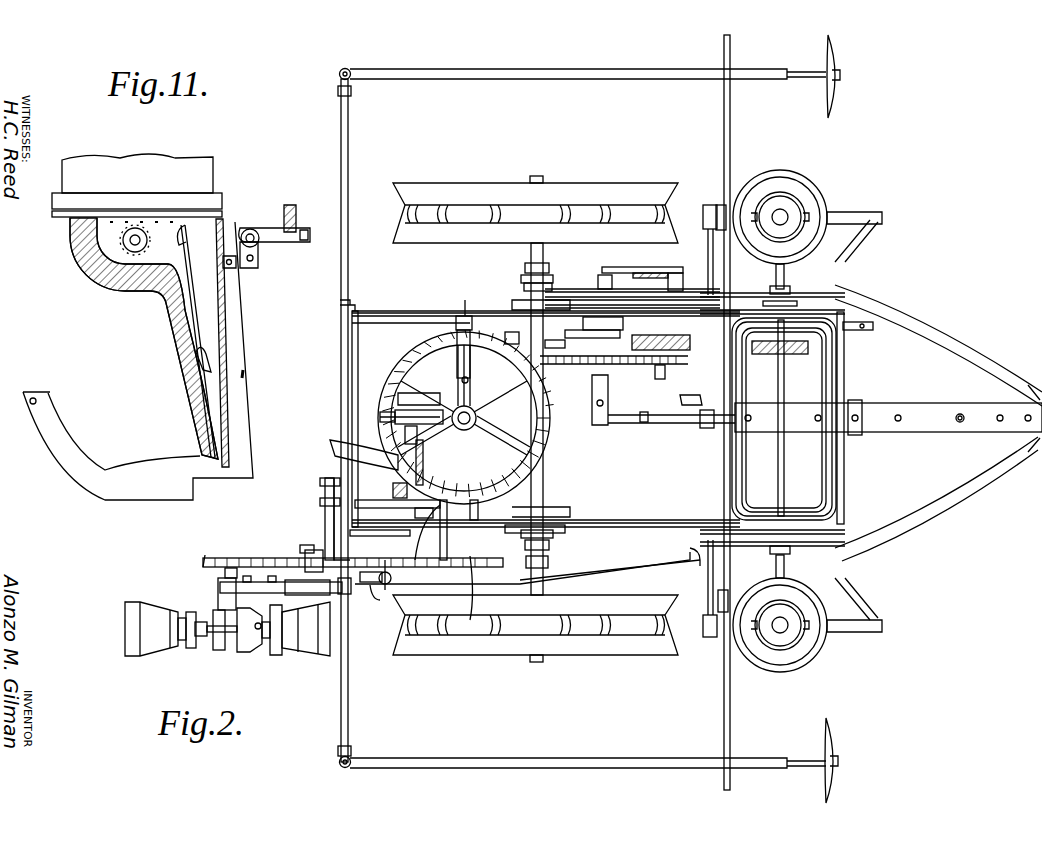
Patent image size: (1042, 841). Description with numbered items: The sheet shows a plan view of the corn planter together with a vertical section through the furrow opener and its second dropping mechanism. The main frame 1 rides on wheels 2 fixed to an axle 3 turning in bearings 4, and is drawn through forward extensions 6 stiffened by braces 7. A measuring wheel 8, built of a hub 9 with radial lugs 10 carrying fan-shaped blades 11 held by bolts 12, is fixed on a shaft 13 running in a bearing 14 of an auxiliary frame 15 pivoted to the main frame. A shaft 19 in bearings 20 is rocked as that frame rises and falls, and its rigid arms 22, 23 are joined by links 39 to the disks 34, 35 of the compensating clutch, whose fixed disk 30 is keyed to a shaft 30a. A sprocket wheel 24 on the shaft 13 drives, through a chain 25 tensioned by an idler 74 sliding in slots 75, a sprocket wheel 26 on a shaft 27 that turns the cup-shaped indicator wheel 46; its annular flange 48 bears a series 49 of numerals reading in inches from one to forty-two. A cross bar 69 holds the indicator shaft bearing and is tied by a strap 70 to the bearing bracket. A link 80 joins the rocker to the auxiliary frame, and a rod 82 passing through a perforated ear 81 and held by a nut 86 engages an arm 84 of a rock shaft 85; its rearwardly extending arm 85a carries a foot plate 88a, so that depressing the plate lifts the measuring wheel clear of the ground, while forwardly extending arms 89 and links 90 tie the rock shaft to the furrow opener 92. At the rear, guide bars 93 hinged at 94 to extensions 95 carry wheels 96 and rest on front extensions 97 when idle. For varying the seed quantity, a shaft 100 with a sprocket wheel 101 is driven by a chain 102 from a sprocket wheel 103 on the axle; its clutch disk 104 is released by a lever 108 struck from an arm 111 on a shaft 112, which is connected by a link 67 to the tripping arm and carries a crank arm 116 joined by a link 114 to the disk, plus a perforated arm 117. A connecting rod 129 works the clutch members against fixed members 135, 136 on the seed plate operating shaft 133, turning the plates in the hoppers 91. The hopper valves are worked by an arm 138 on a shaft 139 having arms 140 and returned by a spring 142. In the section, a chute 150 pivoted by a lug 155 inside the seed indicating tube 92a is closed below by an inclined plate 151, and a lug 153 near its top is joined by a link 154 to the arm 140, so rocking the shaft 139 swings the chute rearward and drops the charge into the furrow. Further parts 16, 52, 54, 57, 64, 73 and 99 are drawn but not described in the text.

In FIG. 2, the main frame 1 is at (340, 400).
In FIG. 2, the wheels 2 is at (610, 192).
In FIG. 2, the axle 3 is at (545, 500).
In FIG. 2, the bearings 4 is at (530, 310).
In FIG. 2, the forward extensions 6 is at (442, 318).
In FIG. 2, the braces 7 is at (948, 340).
In FIG. 2, the measuring wheel 8 is at (438, 548).
In FIG. 2, the hub 9 is at (222, 598).
In FIG. 2, the radial lugs 10 is at (240, 650).
In FIG. 2, the blades 11 is at (158, 652).
In FIG. 2, the bolts 12 is at (260, 650).
In FIG. 2, the shaft 13 is at (222, 572).
In FIG. 2, the bearing 14 is at (218, 585).
In FIG. 2, the auxiliary frame 15 is at (305, 594).
In FIG. 2, the cone pulley 16 is at (325, 656).
In FIG. 2, the shaft 19 is at (430, 542).
In FIG. 2, the bearings 20 is at (322, 515).
In FIG. 2, the rigid arm 22 is at (322, 480).
In FIG. 2, the rigid arm 23 is at (325, 502).
In FIG. 2, the sprocket wheel 24 is at (208, 558).
In FIG. 2, the chain 25 is at (258, 553).
In FIG. 2, the sprocket wheel 26 is at (445, 552).
In FIG. 2, the shaft 27 is at (500, 512).
In FIG. 2, the disk 30 is at (393, 490).
In FIG. 2, the shaft 30a is at (416, 462).
In FIG. 2, the disk 34 is at (340, 452).
In FIG. 2, the disk 35 is at (412, 588).
In FIG. 2, the link 39 is at (345, 482).
In FIG. 2, the indicator wheel 46 is at (495, 430).
In FIG. 2, the lateral annular flange 48 is at (549, 417).
In FIG. 2, the series of numerals 49 is at (408, 364).
In FIG. 2, the slide 52 is at (395, 412).
In FIG. 2, the pin 54 is at (395, 418).
In FIG. 2, the hub 57 is at (464, 400).
In FIG. 2, the pawl 64 is at (432, 398).
In FIG. 2, the link 67 is at (559, 348).
In FIG. 2, the cross bar 69 is at (522, 290).
In FIG. 2, the strap 70 is at (455, 375).
In FIG. 2, the rod 73 is at (473, 660).
In FIG. 2, the idler 74 is at (304, 552).
In FIG. 2, the slots 75 is at (370, 586).
In FIG. 2, the link 80 is at (315, 552).
In FIG. 2, the perforated ear 81 is at (380, 605).
In FIG. 2, the rod 82 is at (560, 577).
In FIG. 2, the arm 84 is at (688, 560).
In FIG. 2, the rock shaft 85 is at (710, 370).
In FIG. 2, the rearwardly extending arm 85a is at (642, 424).
In FIG. 2, the nut 86 is at (387, 600).
In FIG. 2, the foot plate 88a is at (606, 408).
In FIG. 2, the forwardly extending arm 89 is at (750, 300).
In FIG. 2, the link 90 is at (786, 298).
In FIG. 11, the containers or hoppers 91 is at (137, 173).
In FIG. 2, the containers or hoppers 91 is at (825, 233).
In FIG. 11, the furrow opener 92 is at (52, 450).
In FIG. 11, the seed indicating tube 92a is at (176, 353).
In FIG. 2, the guide bar 93 is at (572, 80).
In FIG. 2, the hinge 94 is at (339, 74).
In FIG. 2, the extension 95 is at (341, 232).
In FIG. 2, the wheel or disk 96 is at (832, 95).
In FIG. 2, the extension 97 is at (731, 135).
In FIG. 2, the bracket 99 is at (686, 309).
In FIG. 2, the shaft 100 is at (666, 376).
In FIG. 2, the sprocket wheel 101 is at (677, 399).
In FIG. 2, the chain 102 is at (592, 385).
In FIG. 2, the sprocket wheel 103 is at (525, 345).
In FIG. 2, the disk 104 is at (661, 343).
In FIG. 2, the lever 108 is at (614, 353).
In FIG. 2, the arm 111 is at (592, 343).
In FIG. 2, the shaft 112 is at (598, 330).
In FIG. 2, the link 114 is at (642, 271).
In FIG. 2, the crank arm 116 is at (589, 274).
In FIG. 2, the arm 117 is at (632, 305).
In FIG. 2, the connecting rod 129 is at (852, 332).
In FIG. 11, the seed plate operating shaft 133 is at (147, 244).
In FIG. 2, the seed plate operating shaft 133 is at (785, 352).
In FIG. 2, the fixed member 135 is at (775, 344).
In FIG. 2, the fixed member 136 is at (832, 298).
In FIG. 11, the arm 138 is at (306, 245).
In FIG. 11, the shaft 139 is at (253, 229).
In FIG. 2, the shaft 139 is at (712, 260).
In FIG. 11, the arms 140 is at (262, 250).
In FIG. 2, the arms 140 is at (710, 205).
In FIG. 11, the spring 142 is at (292, 205).
In FIG. 11, the chute 150 is at (208, 410).
In FIG. 11, the inclined plate 151 is at (215, 465).
In FIG. 11, the lug 153 is at (218, 278).
In FIG. 11, the link 154 is at (240, 268).
In FIG. 11, the lug 155 is at (200, 362).